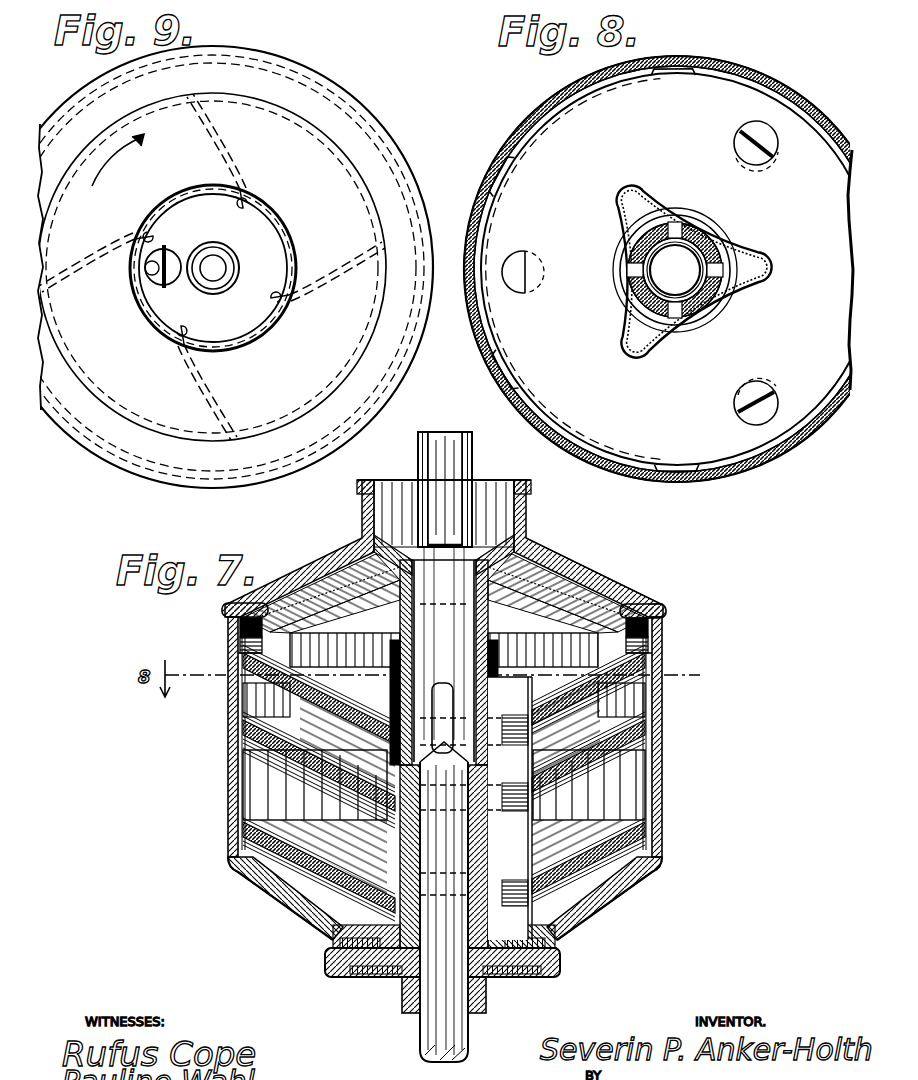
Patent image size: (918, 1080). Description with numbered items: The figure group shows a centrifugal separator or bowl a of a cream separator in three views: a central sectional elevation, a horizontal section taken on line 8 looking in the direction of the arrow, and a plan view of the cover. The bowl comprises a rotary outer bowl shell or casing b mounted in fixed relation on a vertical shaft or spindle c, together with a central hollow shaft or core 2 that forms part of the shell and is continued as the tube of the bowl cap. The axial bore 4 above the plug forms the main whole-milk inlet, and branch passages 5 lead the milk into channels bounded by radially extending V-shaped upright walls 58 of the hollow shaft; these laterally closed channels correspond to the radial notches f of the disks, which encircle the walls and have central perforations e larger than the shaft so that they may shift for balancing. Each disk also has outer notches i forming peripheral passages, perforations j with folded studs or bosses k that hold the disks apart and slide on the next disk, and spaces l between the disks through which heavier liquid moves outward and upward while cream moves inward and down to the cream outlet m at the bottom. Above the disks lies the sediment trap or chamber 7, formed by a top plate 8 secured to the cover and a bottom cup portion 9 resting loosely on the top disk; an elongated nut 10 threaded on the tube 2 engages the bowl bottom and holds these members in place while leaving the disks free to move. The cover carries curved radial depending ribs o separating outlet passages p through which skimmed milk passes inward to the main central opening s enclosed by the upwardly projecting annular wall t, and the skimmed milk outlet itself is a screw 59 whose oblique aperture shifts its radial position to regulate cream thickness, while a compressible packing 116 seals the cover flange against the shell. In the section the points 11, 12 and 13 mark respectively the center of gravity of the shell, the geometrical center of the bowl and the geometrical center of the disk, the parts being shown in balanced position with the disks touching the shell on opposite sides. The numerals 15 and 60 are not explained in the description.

In FIG. 7, the central hollow shaft or core 2 is at (287, 592).
In FIG. 7, the axial bore or opening 4 is at (486, 548).
In FIG. 7, the branch passages 5 is at (510, 700).
In FIG. 7, the sediment trap or chamber 7 is at (600, 600).
In FIG. 7, the top plate or cover 8 is at (522, 592).
In FIG. 7, the bottom or cup portion 9 is at (662, 662).
In FIG. 7, the nut 10 is at (558, 968).
In FIG. 8, the point of gravity of the bowl shell 11 is at (678, 274).
In FIG. 8, the geometrical center of the rotary bowl 12 is at (675, 270).
In FIG. 8, the geometrical center of the disk 13 is at (675, 270).
In FIG. 8, the rim 15 is at (803, 100).
In FIG. 8, the V-shaped upright walls 58 is at (625, 213).
In FIG. 9, the screw 59 is at (166, 287).
In FIG. 7, the screw 59 is at (388, 540).
In FIG. 9, the hub 60 is at (166, 249).
In FIG. 7, the hub 60 is at (364, 553).
In FIG. 7, the yielding or compressible packing 116 is at (228, 627).
In FIG. 7, the centrifugal separator or bowl a is at (612, 862).
In FIG. 8, the rotary outer bowl shell or casing b is at (784, 446).
In FIG. 7, the rotary outer bowl shell or casing b is at (662, 800).
In FIG. 7, the shaft or spindle c is at (455, 1020).
In FIG. 8, the central perforation e is at (615, 262).
In FIG. 8, the radial notches f is at (636, 194).
In FIG. 8, the outer apertures or notches i is at (690, 72).
In FIG. 8, the perforations j is at (777, 141).
In FIG. 8, the studs or bosses k is at (754, 160).
In FIG. 7, the spaces between disks l is at (652, 740).
In FIG. 7, the cream outlet m is at (522, 950).
In FIG. 9, the radial depending ribs o is at (225, 151).
In FIG. 7, the radial depending ribs o is at (400, 615).
In FIG. 9, the outlet passages p is at (320, 167).
In FIG. 7, the main central or axial opening s is at (481, 495).
In FIG. 7, the upwardly projecting annular wall portion t is at (526, 530).